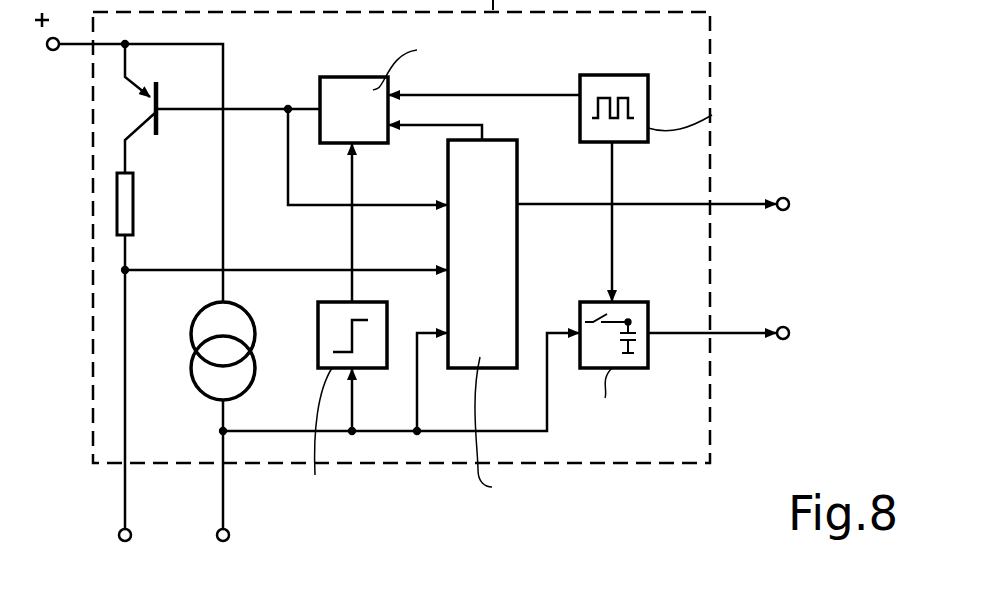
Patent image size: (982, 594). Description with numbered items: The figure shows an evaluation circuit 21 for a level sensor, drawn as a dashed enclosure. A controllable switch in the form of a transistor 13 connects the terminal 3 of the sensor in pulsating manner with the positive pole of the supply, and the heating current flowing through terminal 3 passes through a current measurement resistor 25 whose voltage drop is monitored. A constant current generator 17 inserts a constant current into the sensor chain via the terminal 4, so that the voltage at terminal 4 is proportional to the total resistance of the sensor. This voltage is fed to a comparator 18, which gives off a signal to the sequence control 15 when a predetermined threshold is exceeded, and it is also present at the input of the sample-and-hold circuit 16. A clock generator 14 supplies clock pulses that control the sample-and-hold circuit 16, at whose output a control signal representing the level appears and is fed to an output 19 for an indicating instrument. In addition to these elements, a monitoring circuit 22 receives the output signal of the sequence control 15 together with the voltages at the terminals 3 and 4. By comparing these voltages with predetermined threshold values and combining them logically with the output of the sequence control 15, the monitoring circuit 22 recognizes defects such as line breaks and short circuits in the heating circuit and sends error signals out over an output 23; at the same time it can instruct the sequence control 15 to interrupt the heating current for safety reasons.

The terminal 3 is at (134, 555).
The terminal 4 is at (232, 555).
The transistor 13 is at (222, 108).
The clock generator 14 is at (699, 89).
The sequence control 15 is at (448, 85).
The sample-and-hold circuit 16 is at (637, 348).
The constant current generator 17 is at (239, 404).
The comparator 18 is at (353, 392).
The output 19 is at (730, 314).
The evaluation circuit 21 is at (700, 57).
The monitoring circuit 22 is at (540, 314).
The output 23 is at (699, 204).
The current measurement resistor 25 is at (149, 202).